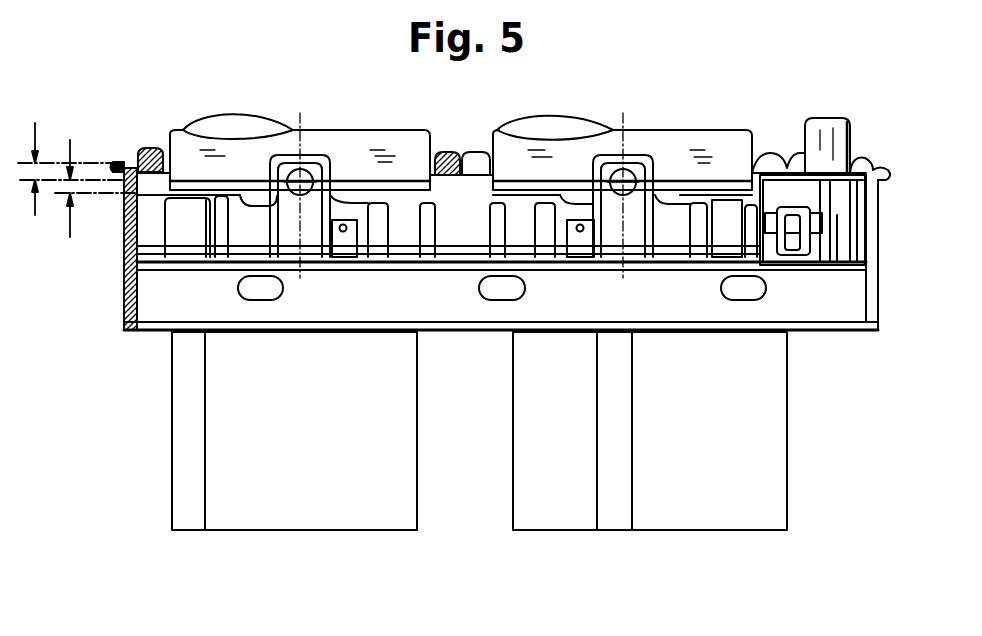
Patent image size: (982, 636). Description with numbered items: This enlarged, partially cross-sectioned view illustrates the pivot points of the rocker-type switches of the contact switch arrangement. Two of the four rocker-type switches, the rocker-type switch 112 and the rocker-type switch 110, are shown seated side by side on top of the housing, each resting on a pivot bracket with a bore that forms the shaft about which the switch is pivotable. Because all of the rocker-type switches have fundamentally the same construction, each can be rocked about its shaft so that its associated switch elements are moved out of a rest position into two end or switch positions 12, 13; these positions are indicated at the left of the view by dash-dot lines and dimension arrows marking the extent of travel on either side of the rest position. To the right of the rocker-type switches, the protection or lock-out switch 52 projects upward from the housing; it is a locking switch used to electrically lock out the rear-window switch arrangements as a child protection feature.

The switch position 12 is at (92, 195).
The switch position 13 is at (85, 163).
The protection or lock-out switch 52 is at (852, 128).
The rocker-type switch 110 is at (702, 150).
The rocker-type switch 112 is at (338, 143).